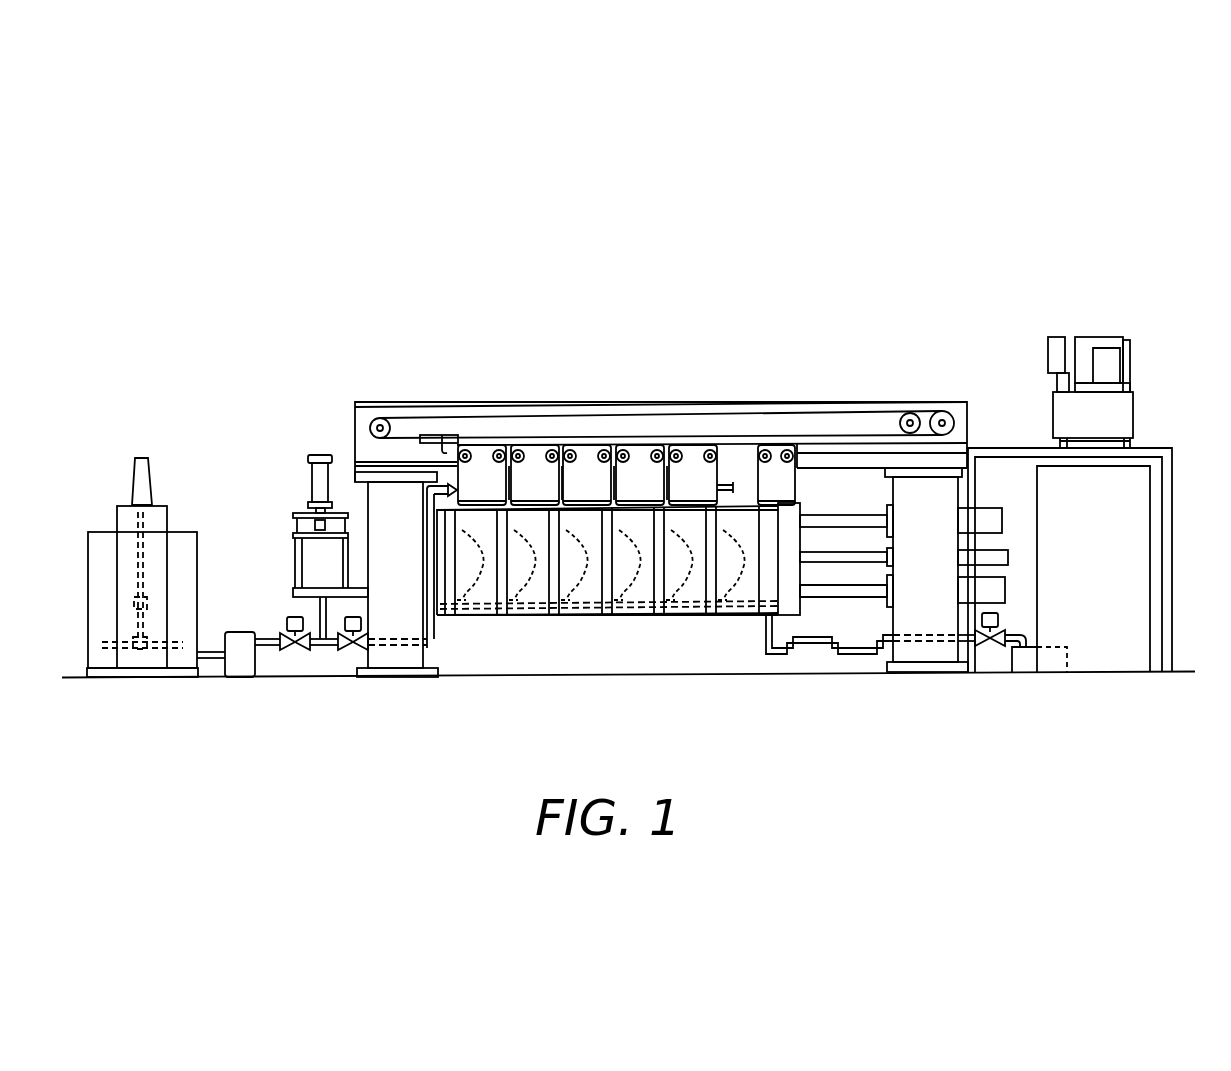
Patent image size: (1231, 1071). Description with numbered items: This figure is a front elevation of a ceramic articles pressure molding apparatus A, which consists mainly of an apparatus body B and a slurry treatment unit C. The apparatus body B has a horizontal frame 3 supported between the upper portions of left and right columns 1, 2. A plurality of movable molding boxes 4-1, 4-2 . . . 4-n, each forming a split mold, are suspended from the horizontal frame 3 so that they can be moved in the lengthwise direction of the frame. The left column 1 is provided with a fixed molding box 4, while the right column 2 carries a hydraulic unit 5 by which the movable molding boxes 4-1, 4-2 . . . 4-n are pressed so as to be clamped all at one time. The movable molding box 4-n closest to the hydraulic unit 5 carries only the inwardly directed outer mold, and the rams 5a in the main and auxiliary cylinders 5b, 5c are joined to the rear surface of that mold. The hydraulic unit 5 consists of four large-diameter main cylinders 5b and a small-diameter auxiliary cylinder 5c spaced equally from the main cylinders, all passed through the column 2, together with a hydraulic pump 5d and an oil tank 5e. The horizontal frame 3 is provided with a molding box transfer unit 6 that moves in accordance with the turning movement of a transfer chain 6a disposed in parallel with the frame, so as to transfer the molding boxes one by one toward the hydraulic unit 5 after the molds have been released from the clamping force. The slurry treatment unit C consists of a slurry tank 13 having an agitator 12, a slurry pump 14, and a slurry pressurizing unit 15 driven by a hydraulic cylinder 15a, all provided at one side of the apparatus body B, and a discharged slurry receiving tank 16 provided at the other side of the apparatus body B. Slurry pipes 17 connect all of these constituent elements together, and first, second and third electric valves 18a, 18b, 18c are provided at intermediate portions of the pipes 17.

The column 1 is at (385, 677).
The column 2 is at (932, 672).
The horizontal frame 3 is at (820, 398).
The fixed molding box 4 is at (448, 617).
The movable molding box 4-1 is at (485, 617).
The movable molding box 4-2 is at (532, 617).
The movable molding box 4-n is at (740, 615).
The hydraulic unit 5 is at (985, 510).
The ram 5a is at (858, 600).
The main cylinder 5b is at (1002, 520).
The auxiliary cylinder 5c is at (1008, 556).
The hydraulic pump 5d is at (1105, 368).
The oil tank 5e is at (1133, 418).
The molding box transfer unit 6 is at (446, 436).
The transfer chain 6a is at (528, 418).
The agitator 12 is at (150, 482).
The slurry tank 13 is at (197, 560).
The slurry pump 14 is at (245, 630).
The slurry pressurizing unit 15 is at (300, 558).
The hydraulic cylinder 15a is at (311, 477).
The discharged slurry receiving tank 16 is at (1027, 645).
The slurry pipes 17 is at (440, 650).
The first electric valve 18a is at (300, 650).
The second electric valve 18b is at (352, 650).
The third electric valve 18c is at (993, 648).
The ceramic articles pressure molding apparatus A is at (874, 378).
The apparatus body B is at (716, 388).
The slurry treatment unit C is at (333, 415).